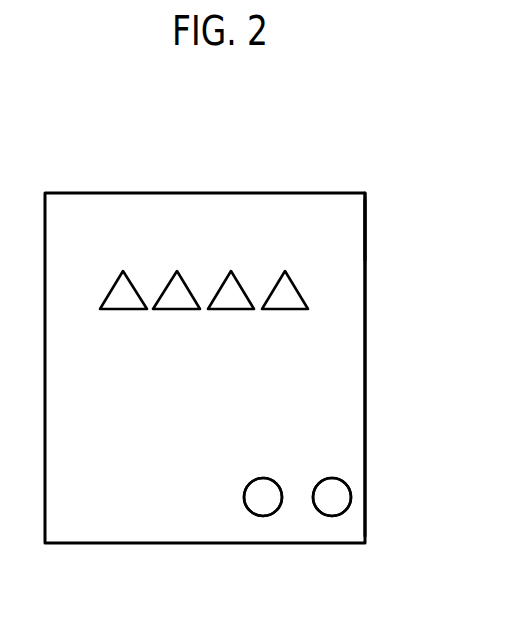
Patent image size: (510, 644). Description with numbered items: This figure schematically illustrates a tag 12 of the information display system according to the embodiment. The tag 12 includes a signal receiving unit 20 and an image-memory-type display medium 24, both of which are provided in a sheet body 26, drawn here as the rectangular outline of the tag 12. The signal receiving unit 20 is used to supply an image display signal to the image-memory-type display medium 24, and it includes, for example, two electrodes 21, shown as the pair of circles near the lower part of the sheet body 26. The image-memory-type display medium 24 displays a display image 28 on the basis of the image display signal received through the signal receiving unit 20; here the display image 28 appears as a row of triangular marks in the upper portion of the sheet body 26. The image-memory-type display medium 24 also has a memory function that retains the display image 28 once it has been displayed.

The tag 12 is at (371, 172).
The signal receiving unit 20 is at (243, 519).
The electrodes 21 is at (330, 504).
The image-memory-type display medium 24 is at (343, 322).
The sheet body 26 is at (365, 248).
The display image 28 is at (214, 263).